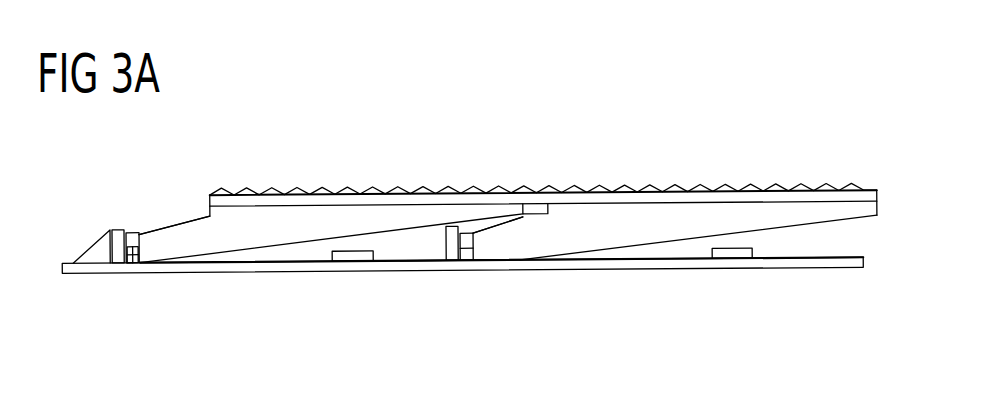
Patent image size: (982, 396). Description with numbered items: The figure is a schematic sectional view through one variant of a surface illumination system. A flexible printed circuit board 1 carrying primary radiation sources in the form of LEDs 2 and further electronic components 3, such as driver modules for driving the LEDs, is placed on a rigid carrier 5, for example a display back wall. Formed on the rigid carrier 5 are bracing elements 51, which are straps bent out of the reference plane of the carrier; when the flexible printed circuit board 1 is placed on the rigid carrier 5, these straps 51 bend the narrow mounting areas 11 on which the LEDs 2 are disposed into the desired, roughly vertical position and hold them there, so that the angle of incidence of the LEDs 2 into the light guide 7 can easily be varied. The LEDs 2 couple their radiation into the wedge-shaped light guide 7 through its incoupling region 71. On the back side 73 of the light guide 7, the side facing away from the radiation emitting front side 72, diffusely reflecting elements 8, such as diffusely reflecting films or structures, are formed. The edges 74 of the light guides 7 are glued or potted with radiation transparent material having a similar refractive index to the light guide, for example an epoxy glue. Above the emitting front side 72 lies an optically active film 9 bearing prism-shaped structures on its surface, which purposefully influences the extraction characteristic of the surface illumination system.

The flexible printed circuit board 1 is at (240, 271).
The primary radiation source 2 is at (133, 272).
The electronic component 3 is at (340, 259).
The rigid carrier 5 is at (430, 264).
The light guide 7 is at (318, 212).
The diffusely reflecting element 8 is at (357, 236).
The optically active film 9 is at (420, 199).
The mounting area 11 is at (126, 226).
The bracing element 51 is at (88, 240).
The light incoupling edge of the light guide 71 is at (163, 233).
The radiation emitting front side 72 is at (262, 193).
The back side of the light guide 73 is at (279, 246).
The edge of the light guide 74 is at (553, 208).